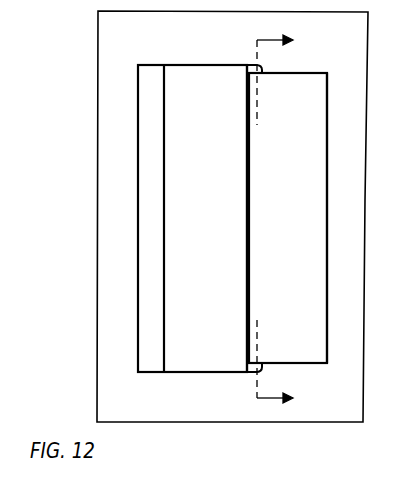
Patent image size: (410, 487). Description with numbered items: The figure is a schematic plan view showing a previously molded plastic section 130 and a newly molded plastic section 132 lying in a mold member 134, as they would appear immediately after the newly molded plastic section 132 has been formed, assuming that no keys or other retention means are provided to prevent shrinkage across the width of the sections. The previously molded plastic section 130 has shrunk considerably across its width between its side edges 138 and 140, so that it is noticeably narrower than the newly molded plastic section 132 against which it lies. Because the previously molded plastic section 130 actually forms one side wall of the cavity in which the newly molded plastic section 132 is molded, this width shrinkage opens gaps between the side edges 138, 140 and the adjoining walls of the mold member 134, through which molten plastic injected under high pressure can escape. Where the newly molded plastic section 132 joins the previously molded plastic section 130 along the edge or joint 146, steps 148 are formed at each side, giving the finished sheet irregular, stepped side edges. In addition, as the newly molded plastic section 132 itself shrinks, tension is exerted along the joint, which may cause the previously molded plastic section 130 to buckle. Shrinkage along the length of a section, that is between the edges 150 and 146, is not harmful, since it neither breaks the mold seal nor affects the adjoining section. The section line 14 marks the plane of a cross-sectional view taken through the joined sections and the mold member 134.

The mold member 134 is at (108, 55).
The newly molded plastic section 132 is at (198, 72).
The edge 150 is at (160, 247).
The edge or joint 146 is at (247, 183).
The previously molded plastic section 130 is at (318, 137).
The side edge 140 is at (305, 75).
The side edge 138 is at (303, 361).
The steps 148 is at (261, 70).
The section line 14- 14 is at (284, 218).